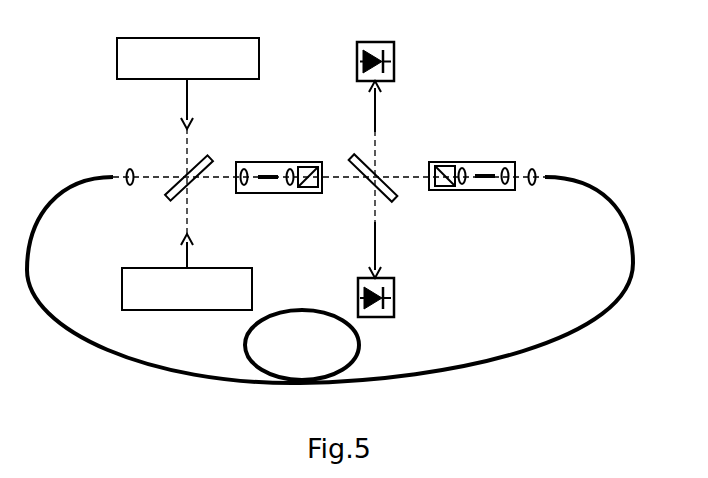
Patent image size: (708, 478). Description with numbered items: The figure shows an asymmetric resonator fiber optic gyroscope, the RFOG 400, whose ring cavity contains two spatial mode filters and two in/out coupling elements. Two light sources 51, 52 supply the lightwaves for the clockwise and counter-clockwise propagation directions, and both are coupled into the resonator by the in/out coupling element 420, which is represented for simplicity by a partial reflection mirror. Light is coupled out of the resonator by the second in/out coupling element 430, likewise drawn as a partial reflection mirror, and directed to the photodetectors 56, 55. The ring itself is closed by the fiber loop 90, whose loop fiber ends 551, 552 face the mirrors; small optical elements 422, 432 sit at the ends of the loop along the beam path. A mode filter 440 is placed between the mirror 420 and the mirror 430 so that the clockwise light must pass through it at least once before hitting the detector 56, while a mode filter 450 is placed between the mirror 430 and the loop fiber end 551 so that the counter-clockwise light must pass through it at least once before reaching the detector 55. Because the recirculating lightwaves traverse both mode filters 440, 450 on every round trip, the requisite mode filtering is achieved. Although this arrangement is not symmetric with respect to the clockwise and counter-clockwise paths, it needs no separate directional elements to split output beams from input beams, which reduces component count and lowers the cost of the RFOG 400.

The light source 52 is at (117, 45).
The light source 51 is at (122, 273).
The photodetector 55 is at (395, 50).
The photodetector 56 is at (395, 290).
The in/out coupling element 420 is at (206, 158).
The in/out coupling element 430 is at (391, 198).
The mode filter 440 is at (286, 162).
The mode filter 450 is at (474, 162).
The lens 422 is at (129, 166).
The lens 432 is at (538, 165).
The loop fiber end 551 is at (580, 178).
The fiber end 552 is at (100, 176).
The fiber loop 90 is at (330, 320).
The RFOG 400 is at (629, 90).